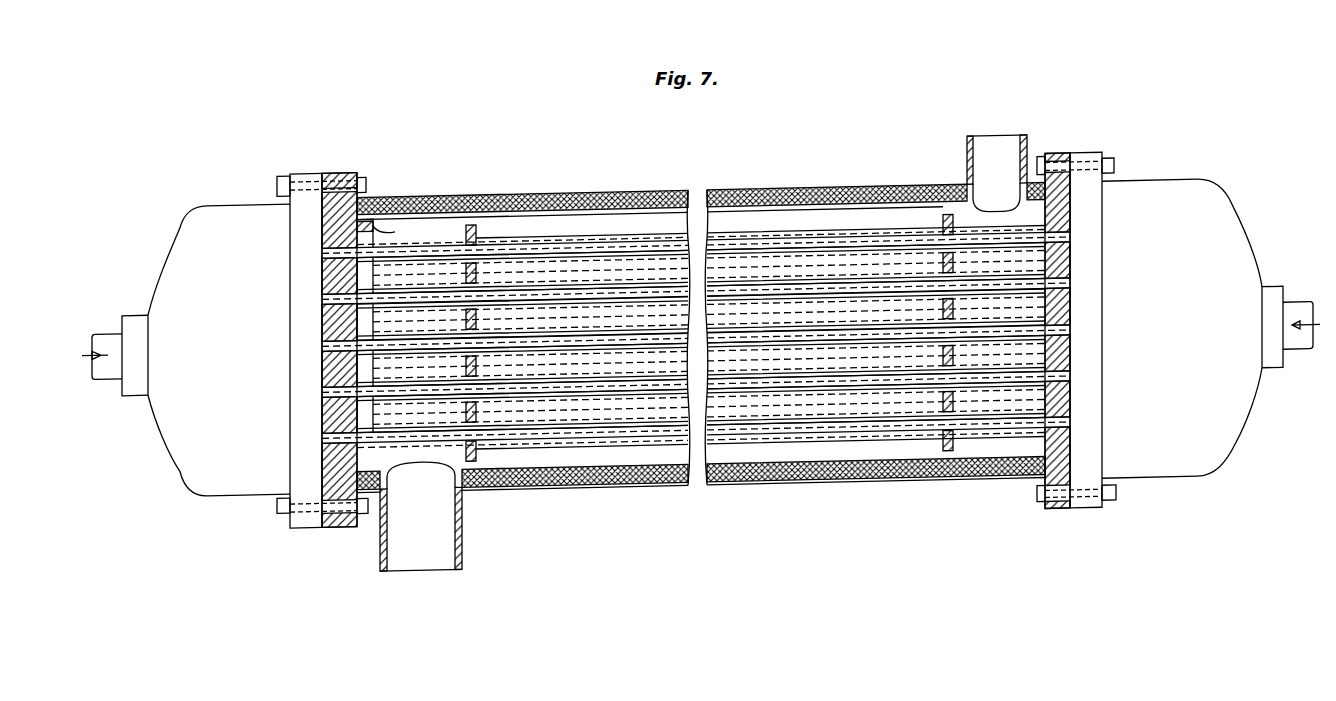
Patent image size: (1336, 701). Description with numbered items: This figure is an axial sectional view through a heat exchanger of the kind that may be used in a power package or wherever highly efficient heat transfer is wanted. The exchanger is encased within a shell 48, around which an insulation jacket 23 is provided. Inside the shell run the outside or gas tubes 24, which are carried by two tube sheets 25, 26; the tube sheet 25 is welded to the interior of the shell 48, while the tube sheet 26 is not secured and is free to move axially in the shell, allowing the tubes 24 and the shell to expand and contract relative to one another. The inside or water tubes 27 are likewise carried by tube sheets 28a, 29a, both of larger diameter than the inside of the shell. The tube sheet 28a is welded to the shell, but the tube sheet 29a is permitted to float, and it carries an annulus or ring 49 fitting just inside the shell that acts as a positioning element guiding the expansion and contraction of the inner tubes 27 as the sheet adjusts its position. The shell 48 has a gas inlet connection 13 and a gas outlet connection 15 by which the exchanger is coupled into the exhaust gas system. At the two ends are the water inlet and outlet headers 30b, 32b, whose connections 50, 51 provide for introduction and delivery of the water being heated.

The gas inlet connection 13 is at (967, 164).
The gas outlet connection 15 is at (462, 516).
The insulation jacket 23 is at (758, 201).
The outside or gas tubes 24 is at (604, 246).
The tube sheet 25 is at (940, 235).
The tube sheet 26 is at (483, 236).
The inside or water tubes 27 is at (425, 247).
The tube sheet 28a is at (1055, 169).
The tube sheet 29a is at (340, 173).
The header 30b is at (1186, 198).
The header 32b is at (210, 202).
The shell 48 is at (532, 219).
The annulus or ring 49 is at (395, 226).
The connection 50 is at (1303, 323).
The connection 51 is at (110, 329).